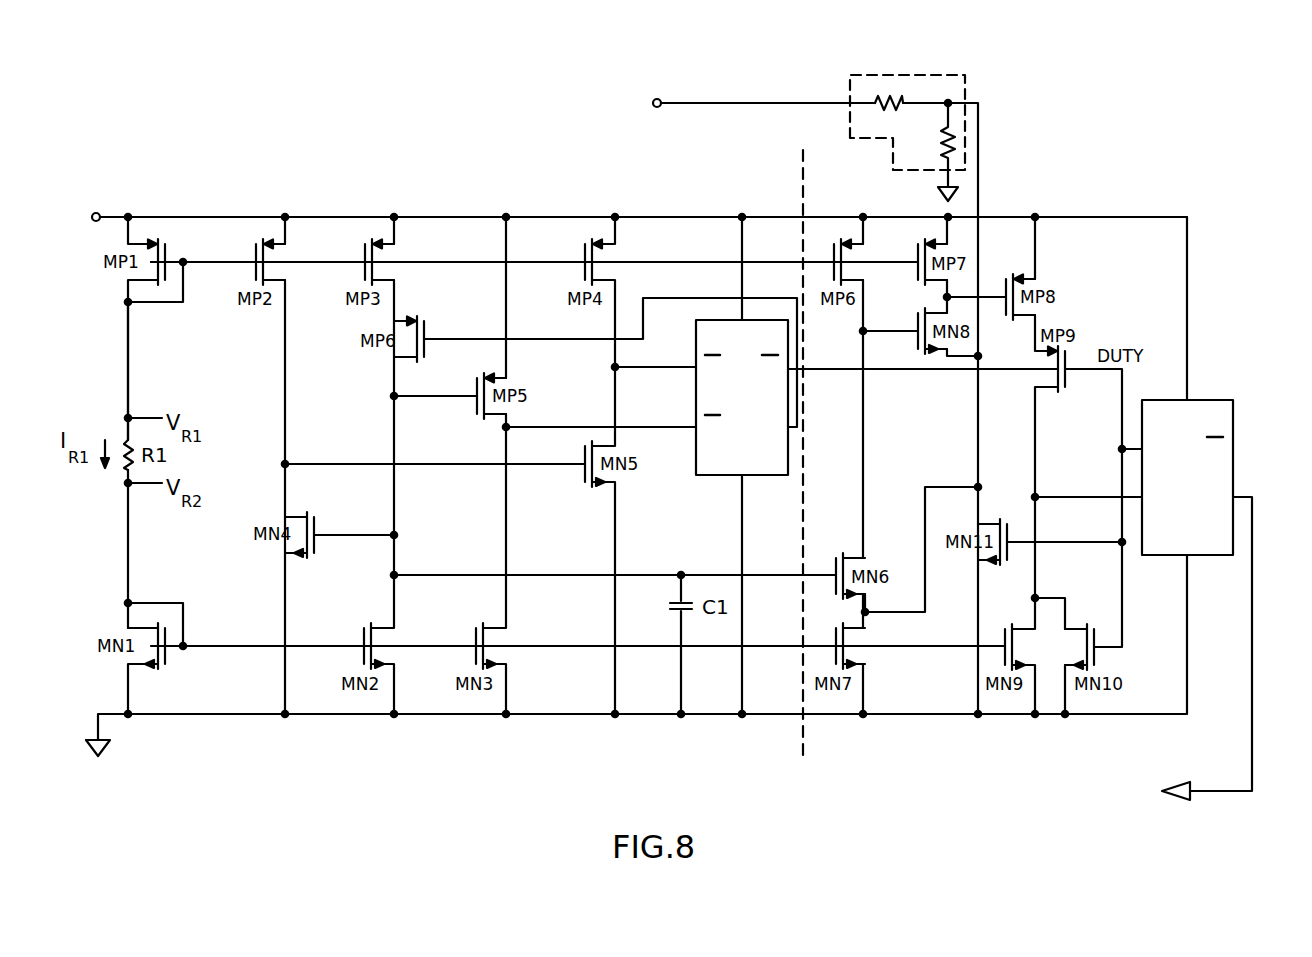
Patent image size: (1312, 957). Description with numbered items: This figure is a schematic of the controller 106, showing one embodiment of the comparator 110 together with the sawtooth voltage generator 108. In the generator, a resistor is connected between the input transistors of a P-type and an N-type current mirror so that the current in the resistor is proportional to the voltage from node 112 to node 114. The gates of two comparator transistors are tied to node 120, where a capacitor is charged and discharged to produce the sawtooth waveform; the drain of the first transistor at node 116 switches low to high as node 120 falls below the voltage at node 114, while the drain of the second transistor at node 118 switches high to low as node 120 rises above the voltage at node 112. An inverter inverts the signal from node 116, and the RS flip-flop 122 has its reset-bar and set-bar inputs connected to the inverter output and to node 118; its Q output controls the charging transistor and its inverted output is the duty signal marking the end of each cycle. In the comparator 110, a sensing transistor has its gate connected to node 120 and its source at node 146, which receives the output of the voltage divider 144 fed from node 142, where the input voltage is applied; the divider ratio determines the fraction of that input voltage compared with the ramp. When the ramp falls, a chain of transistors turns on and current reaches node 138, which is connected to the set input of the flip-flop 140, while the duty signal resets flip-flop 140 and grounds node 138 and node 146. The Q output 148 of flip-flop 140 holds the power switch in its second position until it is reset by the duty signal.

The controller 106 is at (326, 88).
The sawtooth voltage generator 108 is at (707, 198).
The comparator 110 is at (855, 198).
The node 112 is at (128, 390).
The node 114 is at (128, 522).
The node 116 is at (285, 502).
The node 118 is at (506, 427).
The node 120 is at (394, 535).
The RS flip-flop 122 is at (703, 320).
The node 138 is at (1035, 413).
The flip-flop 140 is at (1203, 400).
The node 142 is at (661, 102).
The voltage divider 144 is at (925, 75).
The node 146 is at (863, 612).
The Q output 148 is at (1252, 616).